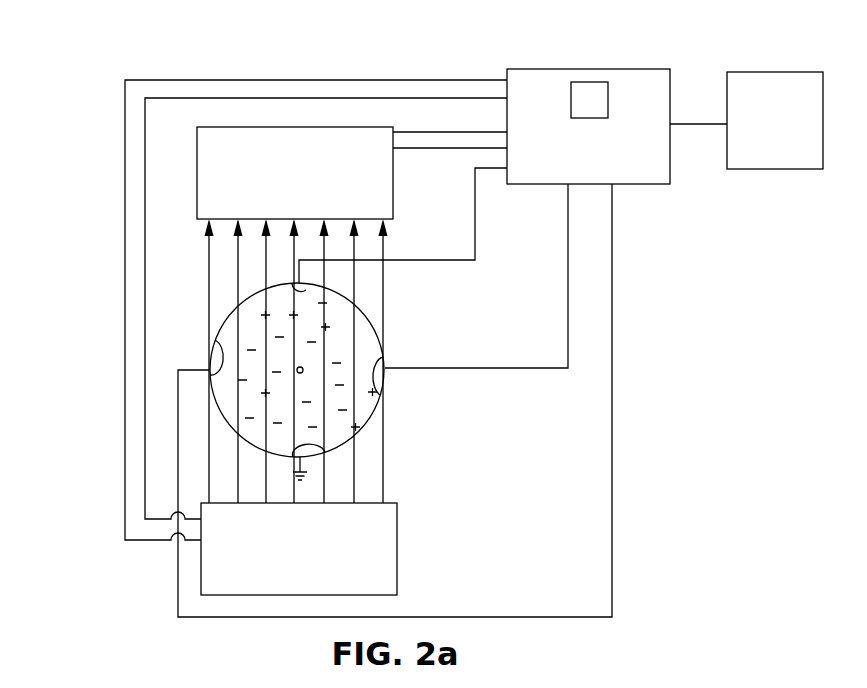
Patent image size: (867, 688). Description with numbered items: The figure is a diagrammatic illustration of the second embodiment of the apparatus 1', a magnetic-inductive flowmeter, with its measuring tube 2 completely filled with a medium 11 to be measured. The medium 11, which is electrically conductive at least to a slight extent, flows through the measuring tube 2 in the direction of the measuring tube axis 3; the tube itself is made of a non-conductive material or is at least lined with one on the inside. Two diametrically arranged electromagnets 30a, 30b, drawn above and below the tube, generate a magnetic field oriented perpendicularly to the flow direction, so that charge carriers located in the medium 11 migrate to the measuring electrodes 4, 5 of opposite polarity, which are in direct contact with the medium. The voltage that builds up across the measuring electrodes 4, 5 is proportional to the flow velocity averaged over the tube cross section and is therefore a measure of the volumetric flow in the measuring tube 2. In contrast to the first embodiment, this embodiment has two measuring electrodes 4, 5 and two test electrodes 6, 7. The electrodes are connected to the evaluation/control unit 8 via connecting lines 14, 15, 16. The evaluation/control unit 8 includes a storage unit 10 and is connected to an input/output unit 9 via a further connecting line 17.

The apparatus 1' is at (59, 18).
The measuring tube 2 is at (357, 426).
The measuring tube axis 3 is at (303, 368).
The measuring electrode 4 is at (383, 393).
The measuring electrode 5 is at (215, 352).
The test electrode 6 is at (303, 292).
The test electrode 7 is at (337, 445).
The evaluation/control unit 8 is at (520, 69).
The input/output unit 9 is at (757, 72).
The storage unit 10 is at (588, 82).
The medium 11 is at (268, 330).
The connecting line 14 is at (612, 418).
The connecting line 15 is at (475, 228).
The connecting line 16 is at (505, 368).
The connecting line 17 is at (683, 124).
The electromagnet 30a is at (393, 178).
The electromagnet 30b is at (397, 545).